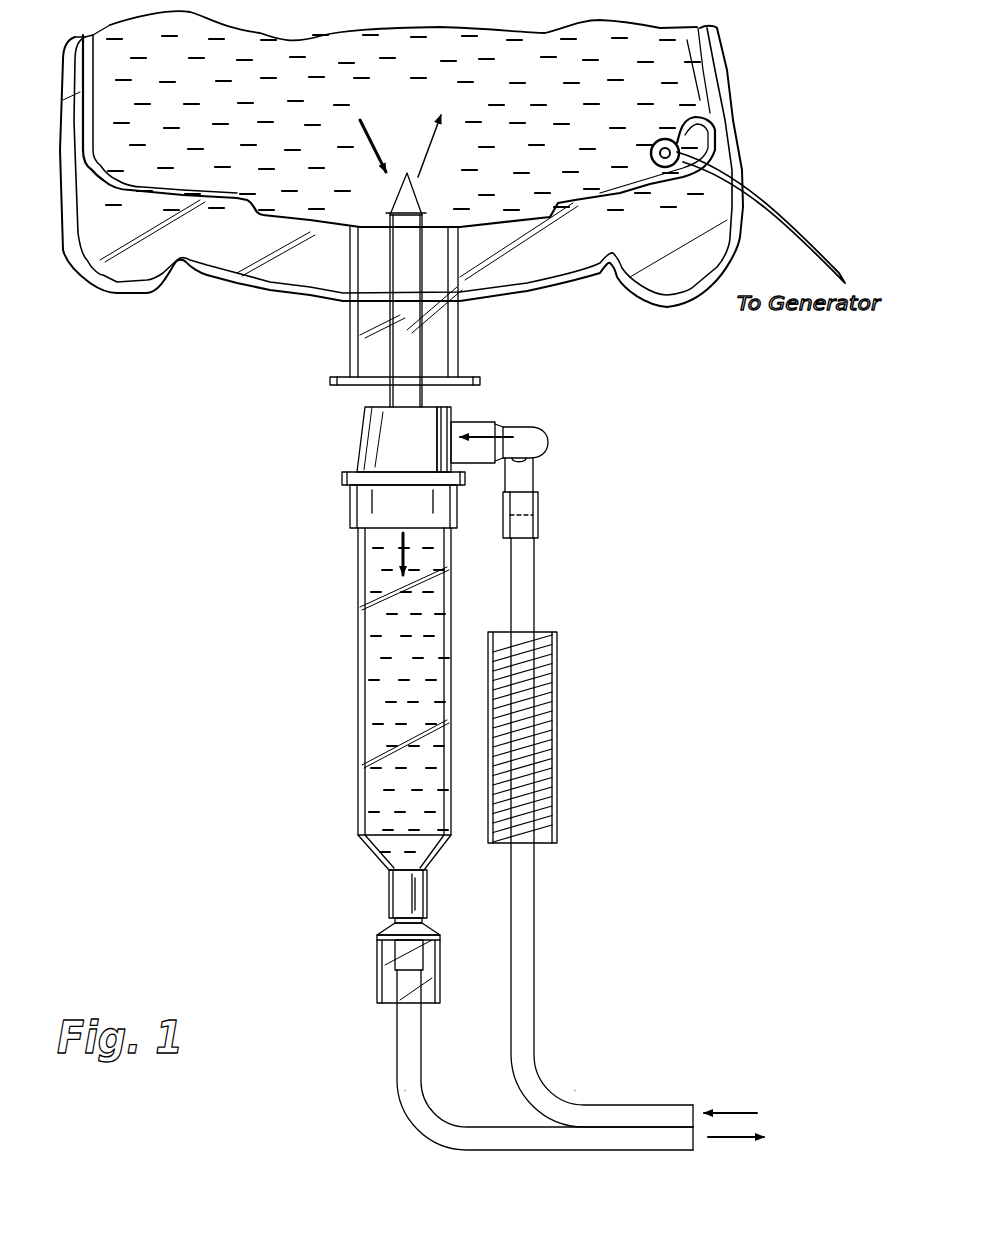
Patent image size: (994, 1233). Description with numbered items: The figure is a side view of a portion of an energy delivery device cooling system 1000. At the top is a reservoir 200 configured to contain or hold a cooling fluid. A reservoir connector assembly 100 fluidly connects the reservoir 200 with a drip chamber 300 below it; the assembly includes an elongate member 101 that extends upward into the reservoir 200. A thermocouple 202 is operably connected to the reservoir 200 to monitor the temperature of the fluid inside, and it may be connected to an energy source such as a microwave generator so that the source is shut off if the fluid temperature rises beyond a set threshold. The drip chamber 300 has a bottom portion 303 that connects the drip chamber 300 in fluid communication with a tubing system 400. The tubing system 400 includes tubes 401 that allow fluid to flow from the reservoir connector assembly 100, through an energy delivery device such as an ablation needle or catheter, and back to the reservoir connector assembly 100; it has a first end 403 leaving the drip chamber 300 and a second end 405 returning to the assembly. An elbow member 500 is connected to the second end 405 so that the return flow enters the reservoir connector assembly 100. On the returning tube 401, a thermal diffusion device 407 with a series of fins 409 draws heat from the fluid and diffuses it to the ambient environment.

The system 1000 is at (158, 822).
The reservoir 200 is at (98, 242).
The thermocouple 202 is at (733, 120).
The elongate member 101 is at (397, 393).
The reservoir connector assembly 100 is at (328, 489).
The elbow member 500 is at (543, 428).
The second end 405 is at (550, 516).
The drip chamber 300 is at (358, 675).
The bottom portion 303 is at (389, 897).
The first end 403 is at (390, 986).
The tubes 401 is at (536, 887).
The tubing system 400 is at (463, 1116).
The thermal diffusion device 407 is at (557, 687).
The fins 409 is at (543, 737).